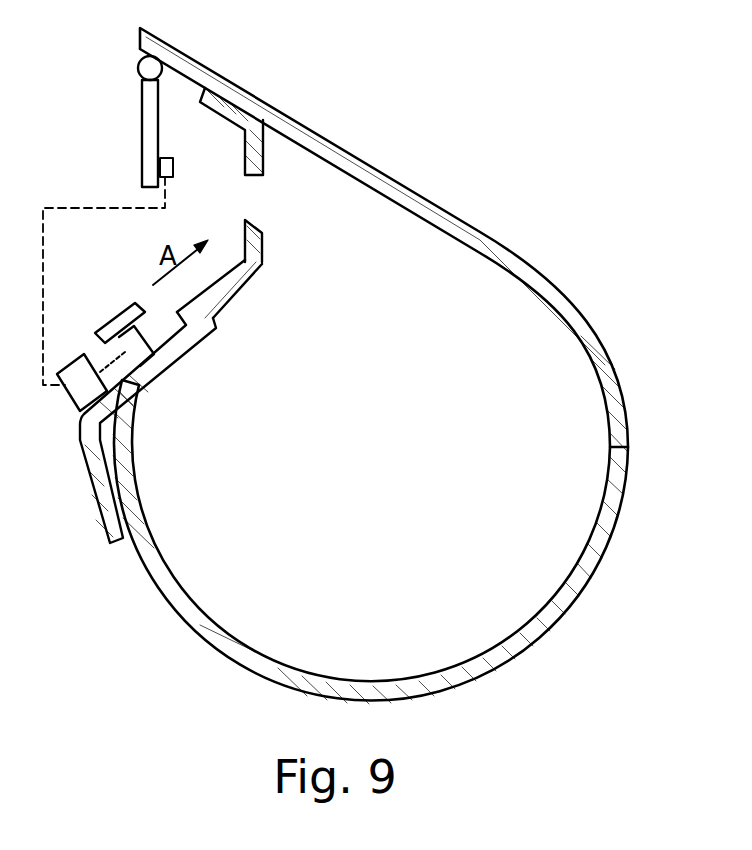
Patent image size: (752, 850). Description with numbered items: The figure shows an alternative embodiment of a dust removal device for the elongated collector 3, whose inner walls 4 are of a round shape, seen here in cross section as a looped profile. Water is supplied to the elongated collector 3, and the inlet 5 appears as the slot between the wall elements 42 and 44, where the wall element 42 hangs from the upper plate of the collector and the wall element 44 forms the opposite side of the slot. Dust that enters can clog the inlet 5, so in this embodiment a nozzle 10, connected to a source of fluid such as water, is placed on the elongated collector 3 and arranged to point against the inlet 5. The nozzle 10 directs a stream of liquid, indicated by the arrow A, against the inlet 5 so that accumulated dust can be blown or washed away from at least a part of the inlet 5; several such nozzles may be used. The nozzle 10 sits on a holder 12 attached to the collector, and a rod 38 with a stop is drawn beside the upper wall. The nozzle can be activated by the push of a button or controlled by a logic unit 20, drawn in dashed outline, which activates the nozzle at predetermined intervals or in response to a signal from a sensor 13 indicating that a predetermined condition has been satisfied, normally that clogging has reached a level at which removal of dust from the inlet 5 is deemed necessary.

The elongated collector 3 is at (557, 283).
The inner walls 4 is at (312, 679).
The inlet 5 is at (257, 205).
The nozzle 10 is at (124, 307).
The holder 12 is at (140, 337).
The sensor 13 is at (173, 172).
The logic unit 20 is at (73, 397).
The rod 38 is at (142, 107).
The wall element 42 is at (265, 167).
The wall element 44 is at (258, 270).